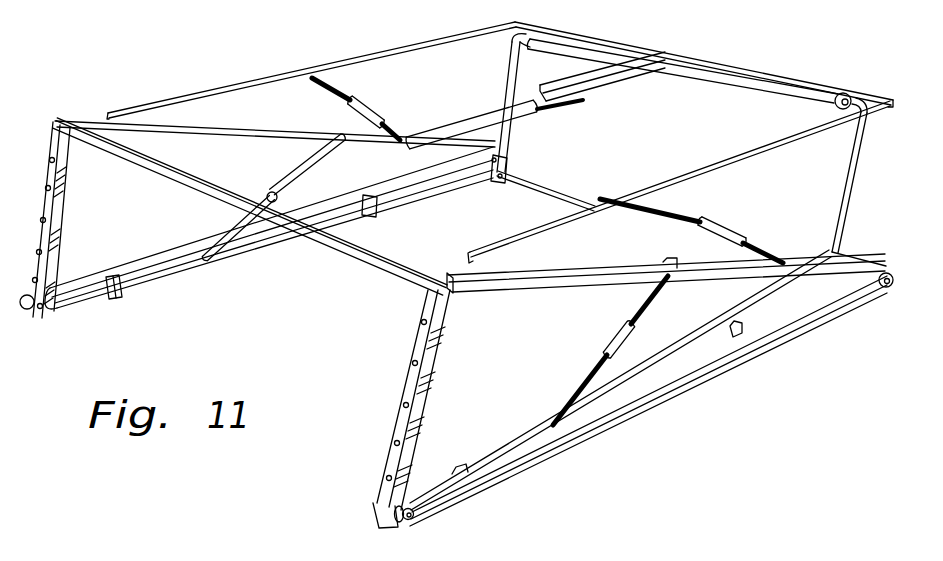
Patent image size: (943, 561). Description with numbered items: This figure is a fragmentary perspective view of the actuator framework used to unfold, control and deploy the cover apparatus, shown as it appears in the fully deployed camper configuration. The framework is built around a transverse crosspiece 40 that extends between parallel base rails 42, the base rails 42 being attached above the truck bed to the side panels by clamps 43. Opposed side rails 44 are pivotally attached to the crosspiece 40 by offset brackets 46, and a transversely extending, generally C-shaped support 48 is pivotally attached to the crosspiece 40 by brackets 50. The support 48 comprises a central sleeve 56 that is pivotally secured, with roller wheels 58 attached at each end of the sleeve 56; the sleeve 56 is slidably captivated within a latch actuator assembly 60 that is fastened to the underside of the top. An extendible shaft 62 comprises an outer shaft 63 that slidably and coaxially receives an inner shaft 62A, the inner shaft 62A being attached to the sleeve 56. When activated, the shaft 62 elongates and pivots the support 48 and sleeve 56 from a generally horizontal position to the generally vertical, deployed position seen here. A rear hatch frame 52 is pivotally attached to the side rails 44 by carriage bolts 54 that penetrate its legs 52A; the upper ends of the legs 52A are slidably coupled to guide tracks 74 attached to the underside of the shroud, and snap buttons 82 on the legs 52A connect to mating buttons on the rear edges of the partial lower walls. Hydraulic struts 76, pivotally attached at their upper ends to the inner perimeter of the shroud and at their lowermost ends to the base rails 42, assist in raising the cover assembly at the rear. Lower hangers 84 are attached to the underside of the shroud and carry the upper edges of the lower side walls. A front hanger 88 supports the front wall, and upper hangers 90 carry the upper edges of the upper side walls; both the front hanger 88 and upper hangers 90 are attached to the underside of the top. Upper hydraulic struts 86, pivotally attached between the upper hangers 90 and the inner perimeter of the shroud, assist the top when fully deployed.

The transverse crosspiece 40 is at (547, 190).
The base rails 42 is at (170, 277).
The clamps 43 is at (120, 298).
The side rails 44 is at (600, 420).
The offset brackets 46 is at (888, 288).
The C-shaped support 48 is at (857, 200).
The brackets 50 is at (813, 288).
The rear hatch frame 52 is at (349, 278).
The legs 52A is at (447, 353).
The carriage bolts 54 is at (423, 517).
The central sleeve 56 is at (697, 73).
The roller wheels 58 is at (840, 97).
The latch actuator assembly 60 is at (577, 83).
The extendible shaft 62 is at (461, 114).
The inner shaft 62A is at (547, 113).
The outer shaft 63 is at (273, 180).
The guide tracks 74 is at (587, 267).
The hydraulic struts 76 is at (627, 320).
The snap buttons 82 is at (402, 400).
The lower hangers 84 is at (247, 132).
The upper hydraulic struts 86 is at (710, 217).
The front hanger 88 is at (752, 68).
The upper hangers 90 is at (727, 153).